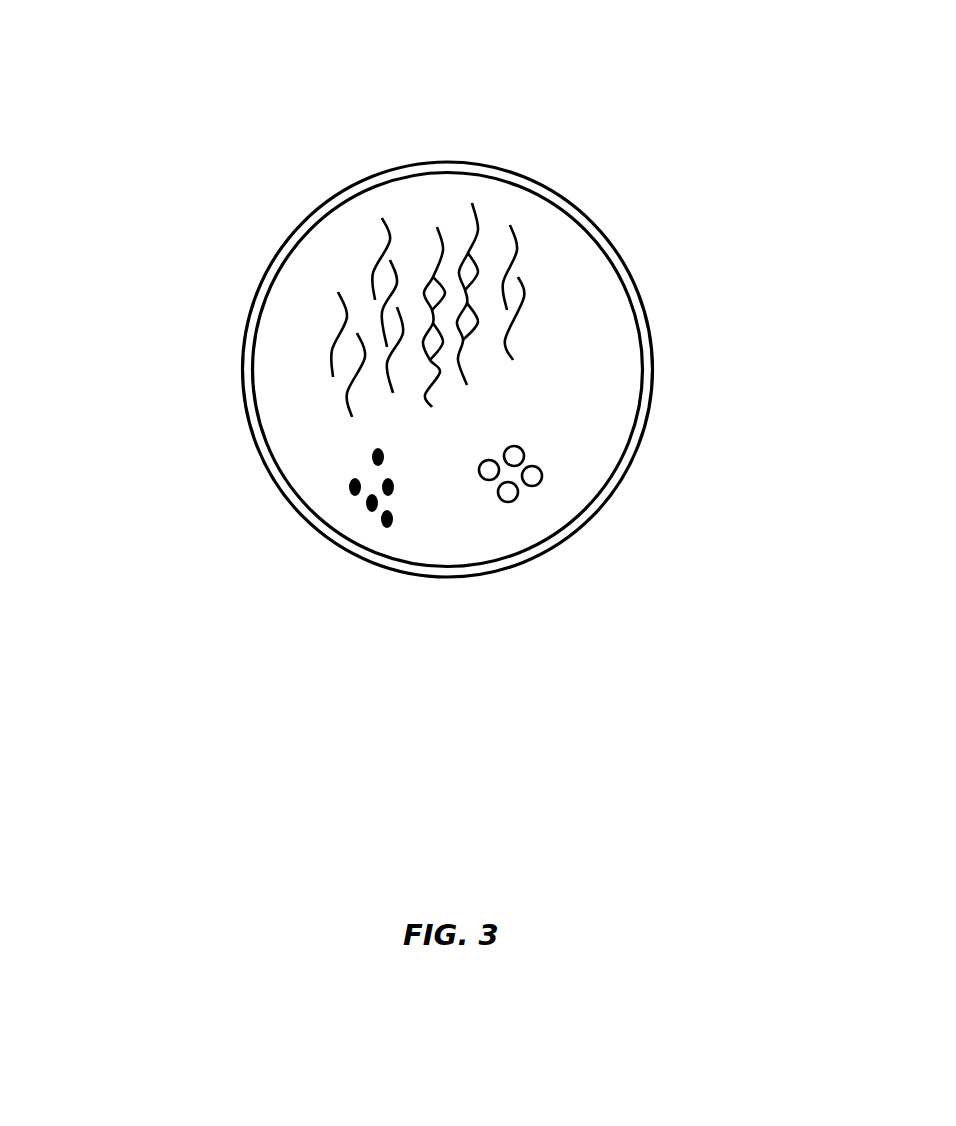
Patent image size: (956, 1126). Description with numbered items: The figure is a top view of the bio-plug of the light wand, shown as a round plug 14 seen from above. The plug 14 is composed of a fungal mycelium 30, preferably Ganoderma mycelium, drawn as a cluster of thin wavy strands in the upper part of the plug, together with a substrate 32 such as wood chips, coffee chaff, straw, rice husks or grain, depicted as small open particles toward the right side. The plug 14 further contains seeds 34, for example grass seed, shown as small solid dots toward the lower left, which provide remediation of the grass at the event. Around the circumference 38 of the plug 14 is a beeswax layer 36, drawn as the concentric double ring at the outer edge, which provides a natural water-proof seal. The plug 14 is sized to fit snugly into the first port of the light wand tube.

The plug 14 is at (163, 77).
The fungal mycelium 30 is at (442, 222).
The substrate 32 is at (531, 453).
The seeds 34 is at (357, 512).
The beeswax layer 36 is at (617, 492).
The circumference 38 is at (270, 277).